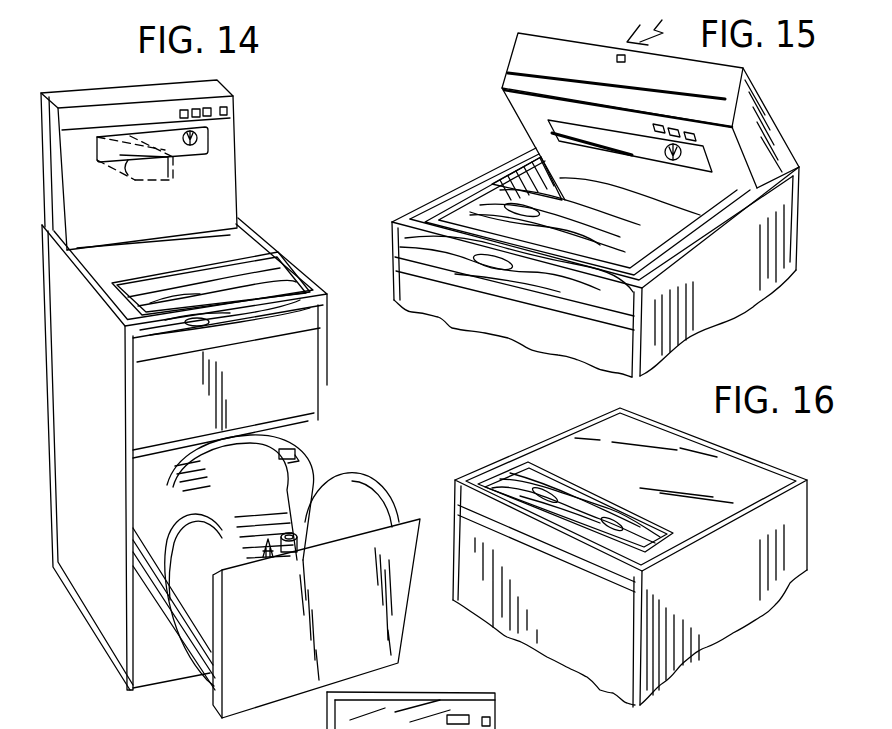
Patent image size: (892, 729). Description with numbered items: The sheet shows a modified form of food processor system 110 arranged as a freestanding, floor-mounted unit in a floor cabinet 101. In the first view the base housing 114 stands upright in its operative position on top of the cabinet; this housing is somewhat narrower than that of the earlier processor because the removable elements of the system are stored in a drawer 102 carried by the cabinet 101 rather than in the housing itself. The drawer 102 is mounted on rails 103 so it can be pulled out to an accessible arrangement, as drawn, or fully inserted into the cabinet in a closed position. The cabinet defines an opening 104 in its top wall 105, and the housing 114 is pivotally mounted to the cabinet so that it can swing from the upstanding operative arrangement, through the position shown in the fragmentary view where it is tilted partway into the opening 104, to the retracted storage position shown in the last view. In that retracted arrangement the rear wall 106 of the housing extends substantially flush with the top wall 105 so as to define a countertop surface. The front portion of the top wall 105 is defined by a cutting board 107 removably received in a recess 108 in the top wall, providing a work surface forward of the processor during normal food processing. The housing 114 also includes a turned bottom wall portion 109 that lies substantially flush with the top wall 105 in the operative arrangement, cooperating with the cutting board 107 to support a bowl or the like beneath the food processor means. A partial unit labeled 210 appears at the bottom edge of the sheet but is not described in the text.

In FIG. 14, the floor cabinet 101 is at (326, 370).
In FIG. 15, the floor cabinet 101 is at (728, 290).
In FIG. 16, the floor cabinet 101 is at (720, 627).
In FIG. 14, the drawer 102 is at (413, 520).
In FIG. 14, the rails 103 is at (136, 546).
In FIG. 14, the opening 104 is at (248, 242).
In FIG. 15, the opening 104 is at (518, 150).
In FIG. 16, the opening 104 is at (567, 437).
In FIG. 14, the top wall 105 is at (107, 307).
In FIG. 15, the top wall 105 is at (447, 190).
In FIG. 16, the rear wall 106 is at (747, 483).
In FIG. 14, the cutting board 107 is at (293, 265).
In FIG. 15, the cutting board 107 is at (585, 215).
In FIG. 16, the cutting board 107 is at (566, 512).
In FIG. 15, the recess 108 is at (587, 216).
In FIG. 16, the recess 108 is at (502, 467).
In FIG. 14, the turned bottom wall portion 109 is at (100, 266).
In FIG. 14, the processor system 110 is at (256, 179).
In FIG. 14, the base housing 114 is at (230, 155).
In FIG. 15, the base housing 114 is at (768, 148).
In FIG. 16, the base housing 114 is at (634, 443).
In FIG. 16, the control unit 210 is at (513, 728).